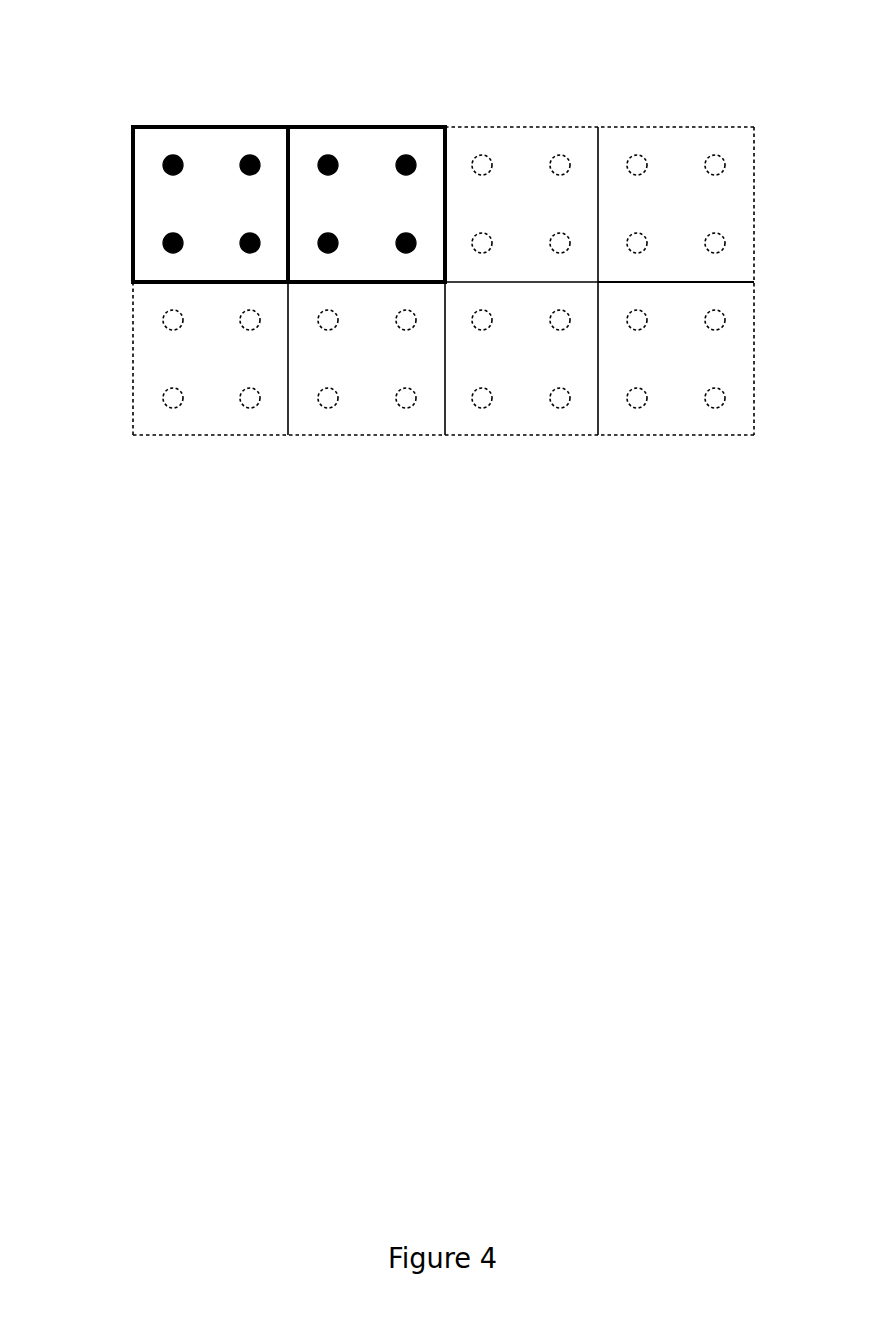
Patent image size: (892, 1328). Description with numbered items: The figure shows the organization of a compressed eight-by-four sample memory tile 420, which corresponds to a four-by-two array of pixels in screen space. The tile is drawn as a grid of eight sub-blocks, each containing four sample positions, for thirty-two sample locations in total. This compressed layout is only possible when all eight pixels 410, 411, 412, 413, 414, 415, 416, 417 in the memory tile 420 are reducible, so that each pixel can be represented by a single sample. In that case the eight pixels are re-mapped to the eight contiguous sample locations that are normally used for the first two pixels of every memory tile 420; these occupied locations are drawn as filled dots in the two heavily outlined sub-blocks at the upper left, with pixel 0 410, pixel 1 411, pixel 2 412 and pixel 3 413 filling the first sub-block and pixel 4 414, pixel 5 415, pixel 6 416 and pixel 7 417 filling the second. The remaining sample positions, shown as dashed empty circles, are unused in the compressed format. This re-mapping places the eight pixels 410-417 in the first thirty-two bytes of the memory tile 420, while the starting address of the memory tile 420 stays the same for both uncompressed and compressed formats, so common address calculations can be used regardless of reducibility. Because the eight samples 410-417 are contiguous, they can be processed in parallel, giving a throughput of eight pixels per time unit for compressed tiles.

The pixel 0 410 is at (163, 165).
The pixel 1 411 is at (248, 155).
The pixel 2 412 is at (163, 238).
The pixel 3 413 is at (250, 253).
The pixel 4 414 is at (330, 155).
The pixel 5 415 is at (410, 157).
The pixel 6 416 is at (328, 253).
The pixel 7 417 is at (406, 253).
The memory tile 420 is at (557, 435).